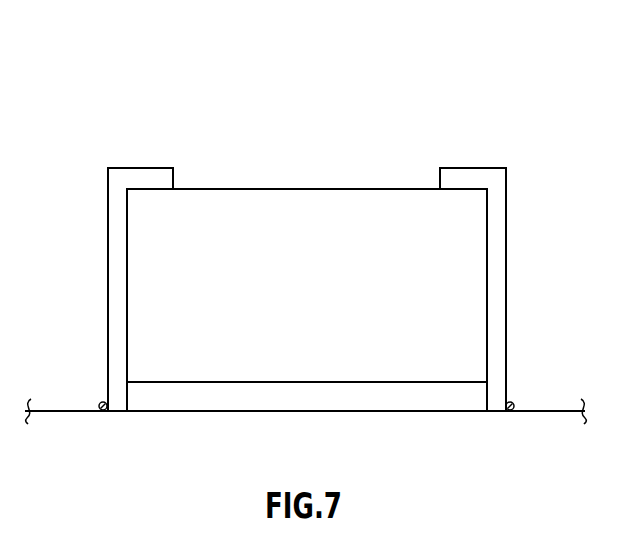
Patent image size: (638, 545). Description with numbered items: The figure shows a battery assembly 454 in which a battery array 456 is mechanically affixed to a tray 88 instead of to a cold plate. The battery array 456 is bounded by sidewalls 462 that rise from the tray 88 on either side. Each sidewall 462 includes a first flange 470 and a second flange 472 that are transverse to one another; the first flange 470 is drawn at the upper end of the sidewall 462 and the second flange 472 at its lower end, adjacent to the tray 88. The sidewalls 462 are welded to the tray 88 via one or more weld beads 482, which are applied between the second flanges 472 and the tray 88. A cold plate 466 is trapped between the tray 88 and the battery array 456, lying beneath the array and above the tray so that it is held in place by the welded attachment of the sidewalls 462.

The battery assembly 454 is at (315, 68).
The battery array 456 is at (352, 148).
The first flange 470 is at (140, 168).
The sidewalls 462 is at (107, 240).
The second flange 472 is at (117, 392).
The weld beads 482 is at (99, 403).
The cold plate 466 is at (326, 398).
The tray 88 is at (550, 412).